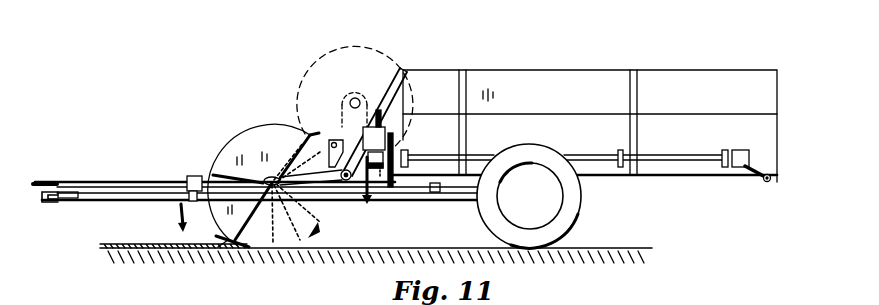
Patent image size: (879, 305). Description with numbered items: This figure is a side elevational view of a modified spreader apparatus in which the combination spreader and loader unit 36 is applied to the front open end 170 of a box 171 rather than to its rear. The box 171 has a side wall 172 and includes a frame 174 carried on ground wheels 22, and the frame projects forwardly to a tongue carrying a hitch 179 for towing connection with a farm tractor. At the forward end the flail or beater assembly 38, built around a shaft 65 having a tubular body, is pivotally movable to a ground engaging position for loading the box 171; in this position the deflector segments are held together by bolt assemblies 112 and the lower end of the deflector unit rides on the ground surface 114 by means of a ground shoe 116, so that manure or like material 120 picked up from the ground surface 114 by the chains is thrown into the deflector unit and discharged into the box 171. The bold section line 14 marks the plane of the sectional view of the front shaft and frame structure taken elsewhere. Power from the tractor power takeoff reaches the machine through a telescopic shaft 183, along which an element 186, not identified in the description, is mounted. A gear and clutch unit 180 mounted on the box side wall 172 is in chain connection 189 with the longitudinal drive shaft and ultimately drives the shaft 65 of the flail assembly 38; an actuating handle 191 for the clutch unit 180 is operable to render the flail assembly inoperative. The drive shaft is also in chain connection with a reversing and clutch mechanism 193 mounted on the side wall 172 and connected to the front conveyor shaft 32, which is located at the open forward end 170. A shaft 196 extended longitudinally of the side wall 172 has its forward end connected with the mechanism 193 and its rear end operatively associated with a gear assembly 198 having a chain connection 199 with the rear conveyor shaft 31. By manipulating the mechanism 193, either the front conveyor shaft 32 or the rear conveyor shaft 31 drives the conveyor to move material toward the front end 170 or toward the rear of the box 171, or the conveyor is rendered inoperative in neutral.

The material discharge direction 14 is at (280, 199).
The ground wheels 22 is at (583, 208).
The rear conveyor shaft 31 is at (768, 183).
The front conveyor shaft 32 is at (346, 181).
The combination spreader and loader unit 36 is at (288, 82).
The flail assembly 38 is at (328, 51).
The shaft 65 is at (357, 97).
The bolt assemblies 112 is at (228, 172).
The ground surface 114 is at (604, 253).
The ground shoe 116 is at (220, 242).
The manure or like material 120 is at (127, 245).
The front open end 170 is at (392, 82).
The box 171 is at (555, 64).
The side wall 172 is at (664, 78).
The frame 174 is at (420, 202).
The hitch 179 is at (47, 203).
The gear and clutch unit 180 is at (386, 135).
The telescopic shaft 183 is at (118, 181).
The clamp 186 is at (195, 176).
The chain connection 189 is at (394, 152).
The actuating handle 191 is at (382, 113).
The reversing and clutch mechanism 193 is at (376, 187).
The shaft 196 is at (682, 155).
The gear assembly 198 is at (742, 150).
The chain connection 199 is at (752, 181).